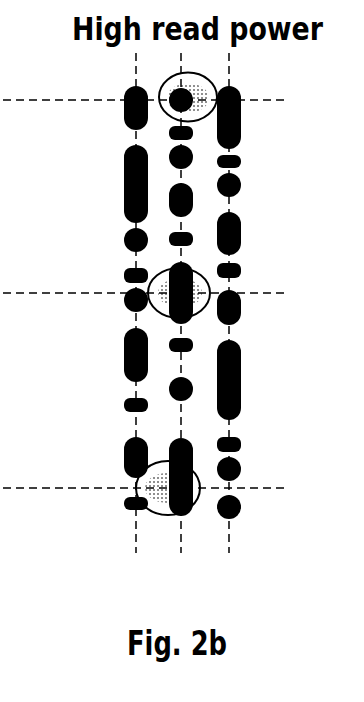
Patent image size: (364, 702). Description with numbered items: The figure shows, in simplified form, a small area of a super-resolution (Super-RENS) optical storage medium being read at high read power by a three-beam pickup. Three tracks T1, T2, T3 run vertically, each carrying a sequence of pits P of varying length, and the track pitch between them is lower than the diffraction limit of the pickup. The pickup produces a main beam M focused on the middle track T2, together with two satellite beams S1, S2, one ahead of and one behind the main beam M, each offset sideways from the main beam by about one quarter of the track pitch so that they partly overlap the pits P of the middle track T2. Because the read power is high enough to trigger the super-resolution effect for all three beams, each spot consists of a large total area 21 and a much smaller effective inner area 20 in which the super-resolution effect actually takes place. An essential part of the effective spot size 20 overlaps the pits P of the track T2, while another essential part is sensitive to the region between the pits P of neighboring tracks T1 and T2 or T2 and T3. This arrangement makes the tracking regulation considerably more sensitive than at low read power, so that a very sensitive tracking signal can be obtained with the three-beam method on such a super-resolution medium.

The satellite beam S2 is at (167, 81).
The satellite beam S1 is at (137, 487).
The effective inner area 20 is at (176, 283).
The total area of the satellite beams 21 is at (167, 110).
The main beam M is at (197, 273).
The pits P is at (240, 387).
The track T1 is at (136, 550).
The track T2 is at (181, 550).
The track T3 is at (229, 550).